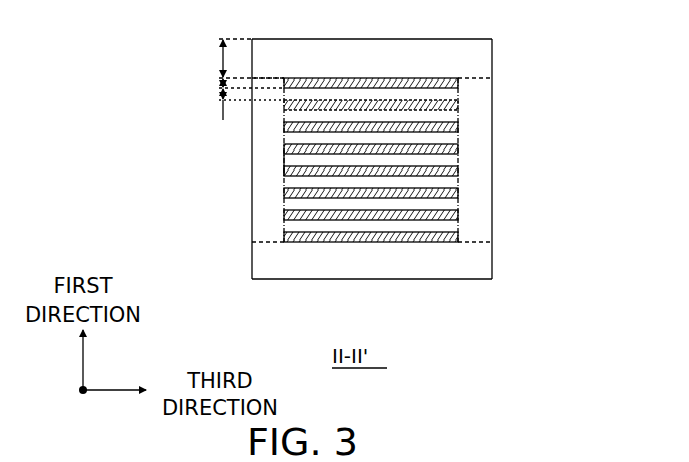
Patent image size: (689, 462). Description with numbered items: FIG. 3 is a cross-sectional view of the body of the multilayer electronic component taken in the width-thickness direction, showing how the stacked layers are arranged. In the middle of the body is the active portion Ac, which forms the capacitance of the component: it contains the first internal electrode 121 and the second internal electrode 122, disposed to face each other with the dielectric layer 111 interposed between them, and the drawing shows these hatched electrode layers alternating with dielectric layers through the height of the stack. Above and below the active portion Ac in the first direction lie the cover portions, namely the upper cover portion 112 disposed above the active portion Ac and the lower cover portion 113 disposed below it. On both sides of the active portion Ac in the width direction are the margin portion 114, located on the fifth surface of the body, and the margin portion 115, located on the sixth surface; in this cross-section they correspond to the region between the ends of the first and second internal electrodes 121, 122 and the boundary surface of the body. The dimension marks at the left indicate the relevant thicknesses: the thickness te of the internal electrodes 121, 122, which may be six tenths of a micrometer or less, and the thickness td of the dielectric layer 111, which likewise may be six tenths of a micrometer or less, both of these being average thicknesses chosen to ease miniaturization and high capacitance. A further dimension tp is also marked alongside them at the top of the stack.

The dielectric layer 111 is at (423, 148).
The upper cover portion 112 is at (478, 52).
The lower cover portion 113 is at (480, 263).
The margin portion 114 is at (262, 207).
The margin portion 115 is at (480, 163).
The first internal electrode 121 is at (445, 77).
The second internal electrode 122 is at (448, 106).
The active portion Ac is at (278, 163).
The thickness tp is at (238, 58).
The thickness of the internal electrodes te is at (220, 84).
The thickness of the dielectric layer td is at (220, 96).